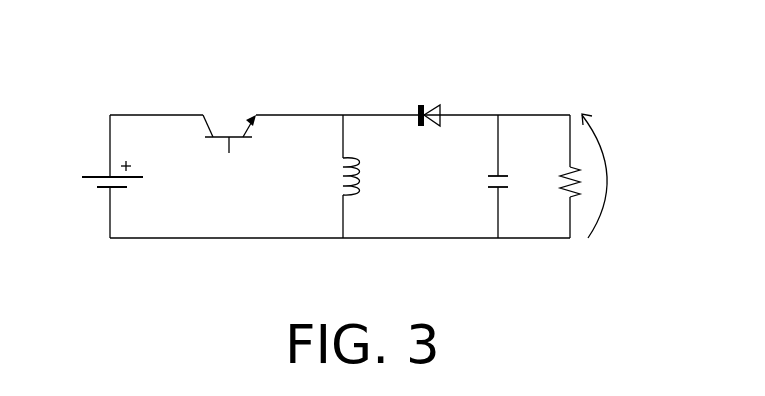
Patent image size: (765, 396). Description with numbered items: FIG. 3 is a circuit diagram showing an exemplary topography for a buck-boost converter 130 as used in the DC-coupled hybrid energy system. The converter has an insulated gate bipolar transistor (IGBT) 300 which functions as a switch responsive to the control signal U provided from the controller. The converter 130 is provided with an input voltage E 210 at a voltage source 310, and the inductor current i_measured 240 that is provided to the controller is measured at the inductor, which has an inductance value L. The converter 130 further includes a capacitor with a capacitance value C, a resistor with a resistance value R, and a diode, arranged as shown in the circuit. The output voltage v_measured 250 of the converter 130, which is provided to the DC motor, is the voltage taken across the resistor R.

The buck-boost converter 130 is at (535, 71).
The input voltage E 210 is at (78, 176).
The voltage source 310 is at (98, 197).
The insulated gate bipolar transistor (IGBT) 300 is at (229, 107).
The inductor current i_measured 240 is at (366, 176).
The output voltage v_measured 250 is at (614, 176).